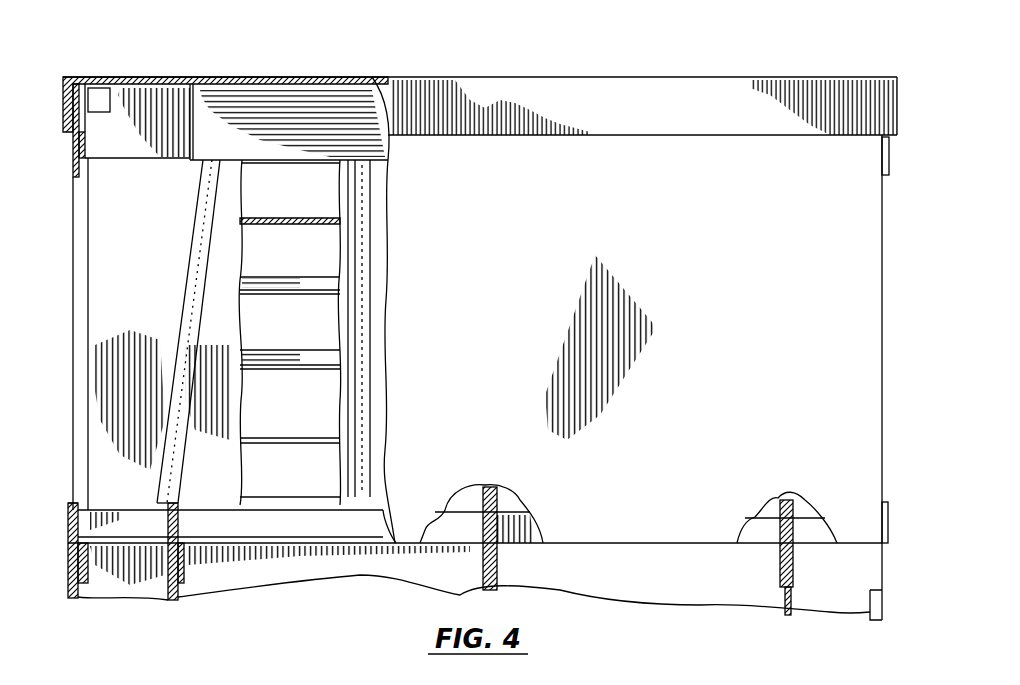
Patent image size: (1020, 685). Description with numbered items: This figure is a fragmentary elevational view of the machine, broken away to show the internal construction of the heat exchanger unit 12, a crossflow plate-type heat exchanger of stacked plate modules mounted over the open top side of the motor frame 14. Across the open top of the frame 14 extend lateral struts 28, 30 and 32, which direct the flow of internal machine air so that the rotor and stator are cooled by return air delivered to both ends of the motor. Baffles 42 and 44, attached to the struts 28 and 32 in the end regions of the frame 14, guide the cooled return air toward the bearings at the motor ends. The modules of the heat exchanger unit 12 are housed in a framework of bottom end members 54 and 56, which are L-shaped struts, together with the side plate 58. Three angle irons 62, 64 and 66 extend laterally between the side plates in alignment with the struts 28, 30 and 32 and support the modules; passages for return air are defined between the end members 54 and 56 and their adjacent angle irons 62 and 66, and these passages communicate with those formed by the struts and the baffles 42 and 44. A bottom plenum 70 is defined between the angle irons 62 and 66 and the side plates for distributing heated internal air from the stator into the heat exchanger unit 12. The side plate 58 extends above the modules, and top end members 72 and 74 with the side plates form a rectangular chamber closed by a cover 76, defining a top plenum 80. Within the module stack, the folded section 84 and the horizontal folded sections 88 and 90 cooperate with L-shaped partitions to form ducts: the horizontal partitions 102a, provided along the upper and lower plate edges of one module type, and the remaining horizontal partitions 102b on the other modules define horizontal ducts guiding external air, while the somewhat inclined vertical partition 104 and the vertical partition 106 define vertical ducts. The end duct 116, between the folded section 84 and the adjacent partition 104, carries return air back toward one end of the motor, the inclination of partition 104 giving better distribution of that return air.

The heat exchanger unit 12 is at (512, 160).
The frame 14 is at (68, 585).
The strut 28 is at (178, 557).
The strut 30 is at (497, 565).
The strut 32 is at (780, 560).
The baffle 42 is at (182, 597).
The baffle 44 is at (795, 589).
The bottom end member 54 is at (70, 508).
The bottom end member 56 is at (888, 525).
The side plate 58 is at (862, 379).
The angle iron 62 is at (178, 530).
The angle iron 64 is at (500, 525).
The angle iron 66 is at (785, 528).
The bottom plenum 70 is at (350, 523).
The top end member 72 is at (73, 150).
The top end member 74 is at (889, 165).
The cover 76 is at (661, 77).
The top plenum 80 is at (352, 114).
The folded section 84 is at (88, 223).
The folded section 88 is at (296, 165).
The folded section 90 is at (268, 537).
The horizontal partition 102a is at (313, 220).
The horizontal partition 102b is at (311, 280).
The vertical partition 104 is at (196, 236).
The vertical partition 106 is at (355, 200).
The end duct 116 is at (120, 308).